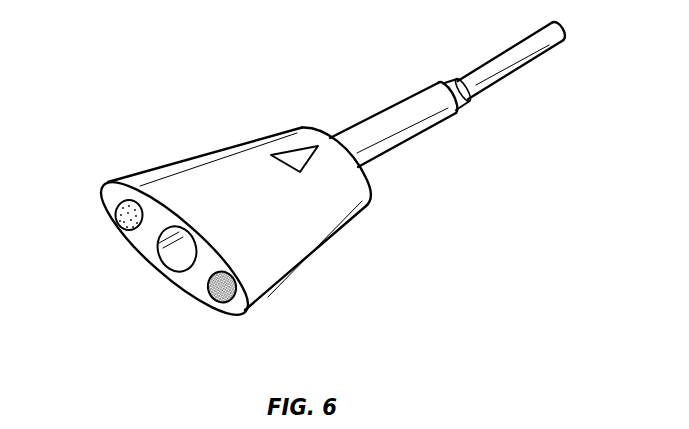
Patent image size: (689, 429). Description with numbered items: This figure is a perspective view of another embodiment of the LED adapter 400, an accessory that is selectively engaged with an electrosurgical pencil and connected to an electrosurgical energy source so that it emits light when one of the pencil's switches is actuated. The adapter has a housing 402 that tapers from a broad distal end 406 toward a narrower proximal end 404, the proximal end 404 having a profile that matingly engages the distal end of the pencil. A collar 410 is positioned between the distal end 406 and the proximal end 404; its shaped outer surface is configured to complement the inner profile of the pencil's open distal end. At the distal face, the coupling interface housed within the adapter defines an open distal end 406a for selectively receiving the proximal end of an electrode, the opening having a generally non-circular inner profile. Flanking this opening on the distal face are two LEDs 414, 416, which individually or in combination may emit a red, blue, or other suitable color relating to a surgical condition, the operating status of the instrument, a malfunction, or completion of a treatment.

The LED adapter 400 is at (157, 104).
The housing 402 is at (307, 237).
The proximal end 404 is at (507, 62).
The distal end 406 is at (110, 197).
The open distal end 406a is at (170, 262).
The collar 410 is at (405, 125).
The LED 414 is at (210, 299).
The LED 416 is at (113, 217).